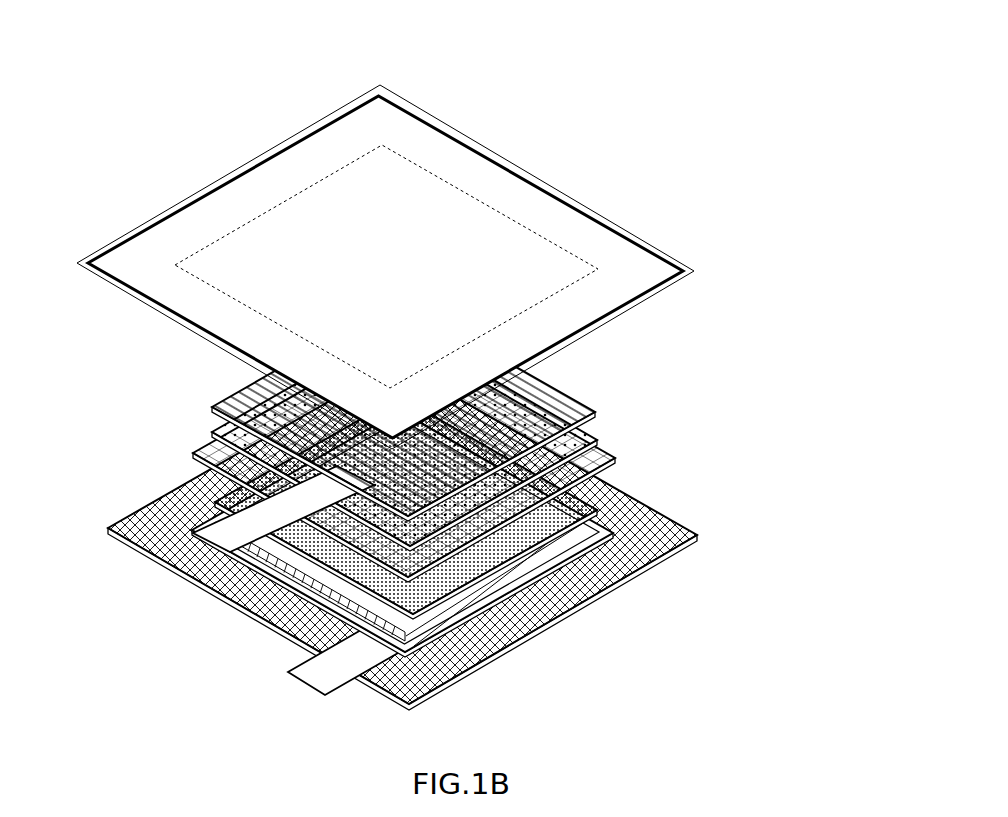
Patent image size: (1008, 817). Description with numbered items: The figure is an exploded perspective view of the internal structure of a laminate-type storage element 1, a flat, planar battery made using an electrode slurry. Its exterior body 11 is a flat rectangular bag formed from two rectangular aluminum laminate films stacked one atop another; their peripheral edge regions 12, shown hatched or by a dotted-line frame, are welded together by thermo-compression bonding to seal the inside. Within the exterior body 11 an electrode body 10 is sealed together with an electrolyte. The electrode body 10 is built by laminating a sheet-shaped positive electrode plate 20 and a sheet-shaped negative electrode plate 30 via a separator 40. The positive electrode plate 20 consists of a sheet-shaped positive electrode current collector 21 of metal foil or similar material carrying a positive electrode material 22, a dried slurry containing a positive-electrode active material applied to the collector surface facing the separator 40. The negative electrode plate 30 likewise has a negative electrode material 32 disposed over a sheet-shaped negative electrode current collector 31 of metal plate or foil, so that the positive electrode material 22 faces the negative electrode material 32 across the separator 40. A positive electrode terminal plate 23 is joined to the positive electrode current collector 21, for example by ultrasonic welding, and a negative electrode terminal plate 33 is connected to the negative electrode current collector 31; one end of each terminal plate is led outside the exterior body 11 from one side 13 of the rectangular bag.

The laminate-type storage element 1 is at (590, 105).
The electrode body 10 is at (502, 515).
The exterior body 11 is at (463, 407).
The peripheral edge regions 12 is at (571, 214).
The one side 13 is at (216, 340).
The positive electrode plate 20 is at (518, 563).
The positive electrode current collector 21 is at (600, 515).
The positive electrode material 22 is at (587, 480).
The positive electrode terminal plate 23 is at (322, 669).
The negative electrode plate 30 is at (478, 460).
The negative electrode current collector 31 is at (558, 403).
The negative electrode material 32 is at (590, 427).
The negative electrode terminal plate 33 is at (240, 530).
The separator 40 is at (607, 450).